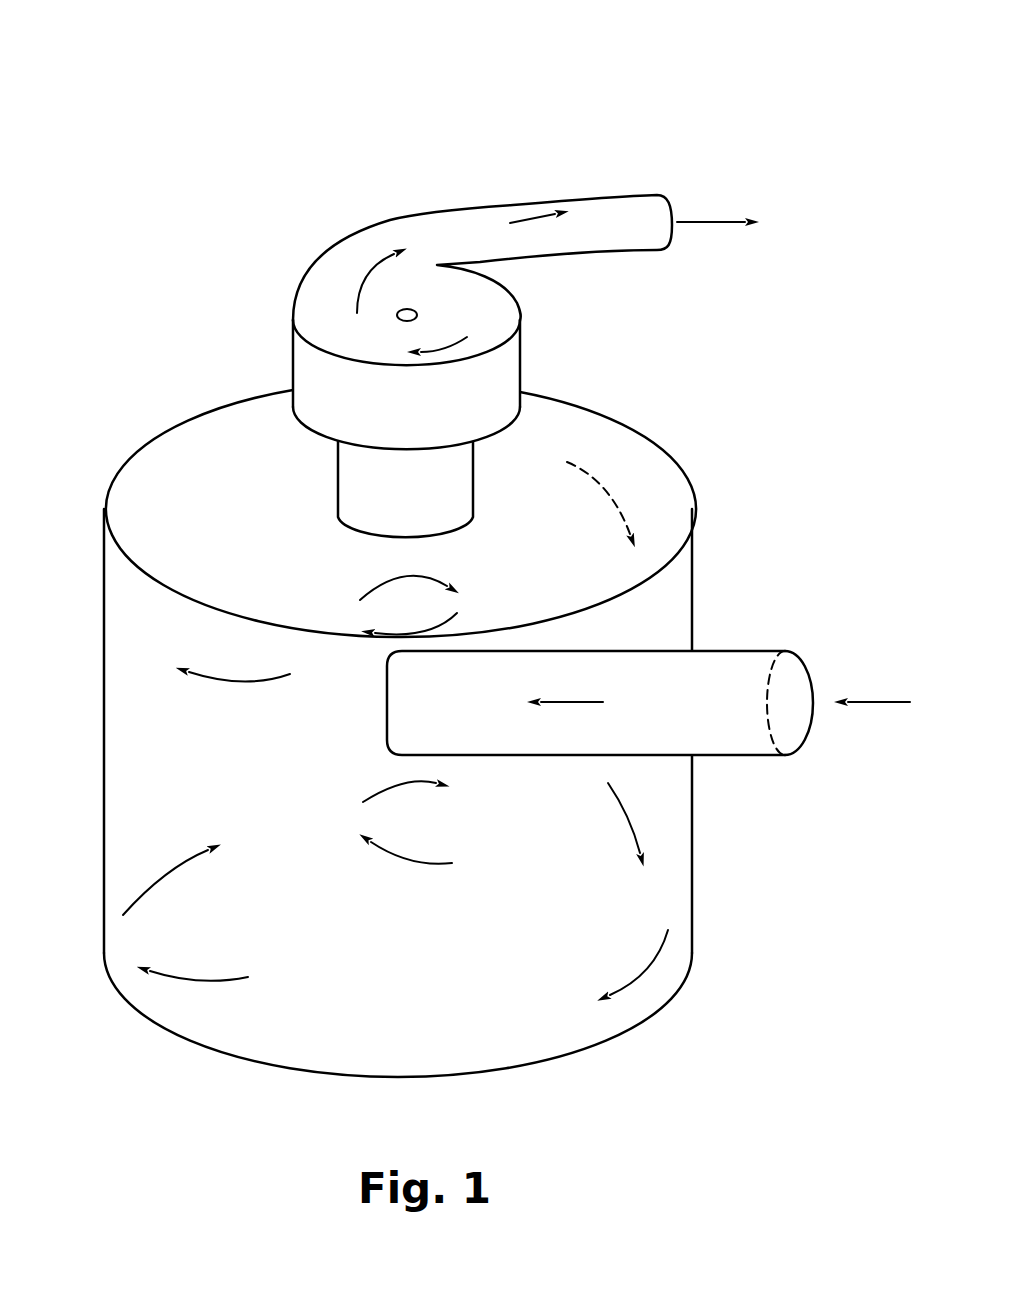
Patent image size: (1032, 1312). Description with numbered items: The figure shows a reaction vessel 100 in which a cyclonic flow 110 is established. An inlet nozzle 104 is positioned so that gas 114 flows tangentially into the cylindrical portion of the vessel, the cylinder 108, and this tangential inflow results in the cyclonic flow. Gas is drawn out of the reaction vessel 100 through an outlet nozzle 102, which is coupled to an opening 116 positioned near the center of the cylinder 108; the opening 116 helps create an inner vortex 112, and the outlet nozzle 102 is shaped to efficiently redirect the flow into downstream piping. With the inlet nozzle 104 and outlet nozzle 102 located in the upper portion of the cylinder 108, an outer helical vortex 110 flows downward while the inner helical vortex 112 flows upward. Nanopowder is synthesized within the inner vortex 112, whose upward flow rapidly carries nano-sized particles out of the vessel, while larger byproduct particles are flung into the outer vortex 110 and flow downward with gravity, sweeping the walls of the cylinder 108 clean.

The reaction vessel 100 is at (497, 100).
The outlet nozzle 102 is at (670, 212).
The inlet nozzle 104 is at (813, 660).
The cylindrical portion of the vessel 108 is at (692, 600).
The cyclonic flow (outer helical vortex) 110 is at (220, 678).
The inner helical vortex 112 is at (373, 270).
The gas 114 is at (585, 703).
The opening 116 is at (337, 496).